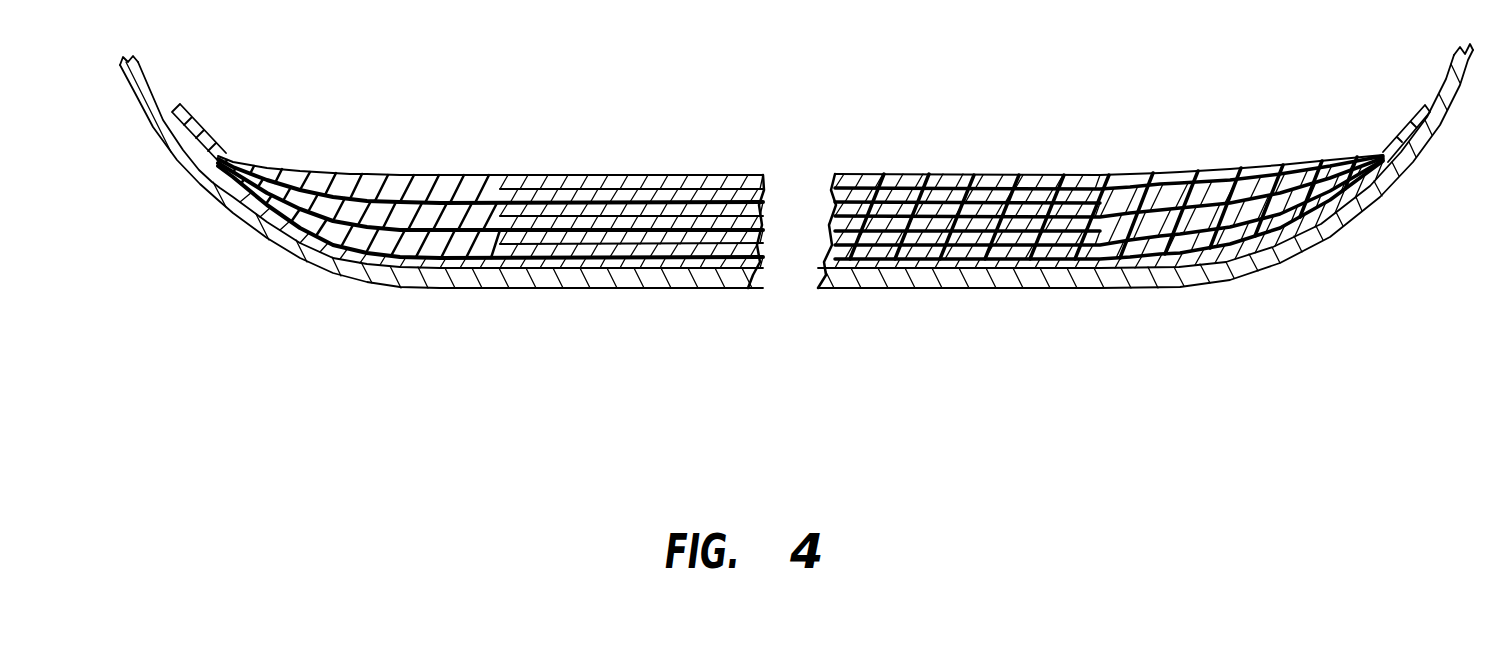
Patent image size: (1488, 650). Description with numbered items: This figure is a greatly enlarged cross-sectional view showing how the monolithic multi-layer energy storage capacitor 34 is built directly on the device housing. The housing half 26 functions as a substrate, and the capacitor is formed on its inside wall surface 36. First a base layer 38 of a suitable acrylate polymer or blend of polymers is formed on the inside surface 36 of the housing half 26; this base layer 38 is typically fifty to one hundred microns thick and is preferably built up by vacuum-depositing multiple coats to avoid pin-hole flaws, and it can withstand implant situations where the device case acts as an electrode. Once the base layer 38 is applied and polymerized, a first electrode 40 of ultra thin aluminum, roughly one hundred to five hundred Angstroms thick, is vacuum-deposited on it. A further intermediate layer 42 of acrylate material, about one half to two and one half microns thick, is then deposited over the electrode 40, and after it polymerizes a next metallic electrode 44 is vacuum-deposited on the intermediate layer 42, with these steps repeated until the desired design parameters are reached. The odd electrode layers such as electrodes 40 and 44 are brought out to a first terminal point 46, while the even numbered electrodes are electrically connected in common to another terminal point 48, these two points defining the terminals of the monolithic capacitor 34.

The housing half 26 is at (398, 290).
The monolithic multi-layer energy storage capacitor 34 is at (800, 225).
The inside wall surface 36 is at (168, 63).
The base layer 38 is at (1070, 265).
The first electrode 40 is at (1008, 240).
The intermediate layer 42 is at (933, 250).
The next metallic electrode 44 is at (846, 284).
The first terminal point 46 is at (222, 158).
The another terminal point 48 is at (1383, 155).